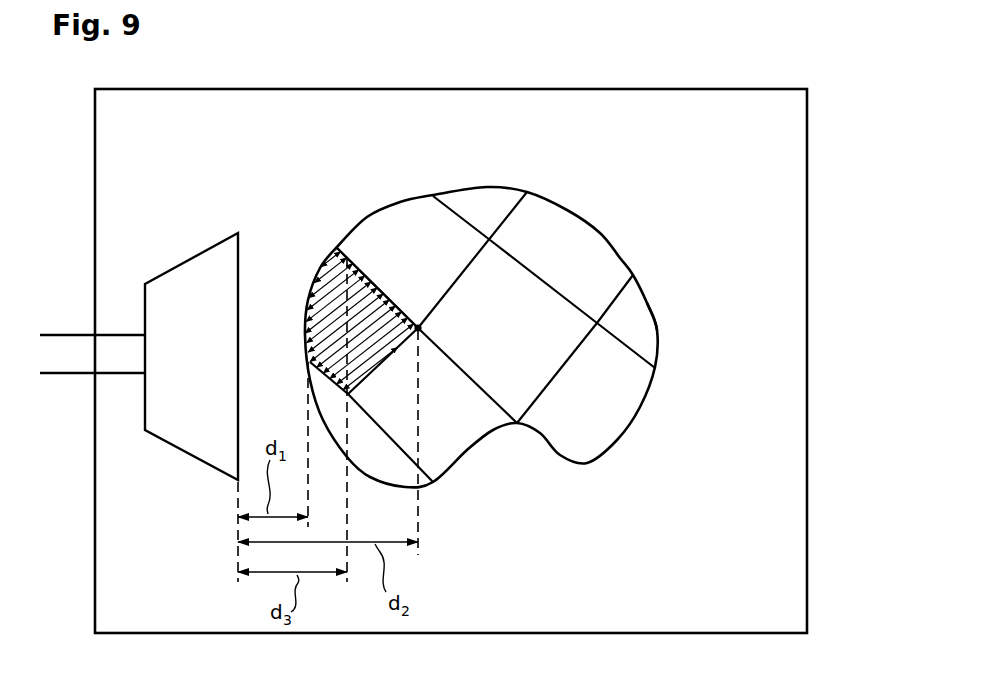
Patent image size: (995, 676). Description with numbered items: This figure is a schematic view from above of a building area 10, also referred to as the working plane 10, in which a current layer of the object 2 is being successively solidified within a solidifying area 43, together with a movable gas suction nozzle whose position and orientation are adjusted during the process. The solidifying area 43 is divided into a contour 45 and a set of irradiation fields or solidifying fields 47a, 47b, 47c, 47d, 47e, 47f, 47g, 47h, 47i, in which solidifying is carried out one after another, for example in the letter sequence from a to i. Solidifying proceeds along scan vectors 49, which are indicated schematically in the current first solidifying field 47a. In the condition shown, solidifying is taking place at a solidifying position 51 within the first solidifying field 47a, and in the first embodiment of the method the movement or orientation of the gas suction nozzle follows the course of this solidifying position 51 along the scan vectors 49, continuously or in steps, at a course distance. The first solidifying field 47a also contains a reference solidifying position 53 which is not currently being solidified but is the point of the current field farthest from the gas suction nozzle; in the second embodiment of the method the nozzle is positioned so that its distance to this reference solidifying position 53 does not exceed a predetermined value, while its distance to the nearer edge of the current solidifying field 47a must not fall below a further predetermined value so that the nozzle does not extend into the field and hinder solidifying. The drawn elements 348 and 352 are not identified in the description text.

The object 2 is at (517, 314).
The solidifying area 43 is at (621, 228).
The building area 10 is at (749, 421).
The contour 45 is at (652, 297).
The first solidifying field 47a is at (324, 267).
The solidifying field 47b is at (457, 251).
The solidifying field 47c is at (502, 218).
The solidifying field 47d is at (392, 466).
The solidifying field 47e is at (477, 428).
The solidifying field 47f is at (516, 334).
The solidifying field 47g is at (580, 251).
The solidifying field 47h is at (613, 406).
The solidifying field 47i is at (646, 331).
The scan vectors 49 is at (327, 258).
The solidifying position 51 is at (362, 270).
The reference solidifying position 53 is at (418, 326).
The ultrasonic transducer 348 is at (184, 264).
The shaft 352 is at (117, 333).